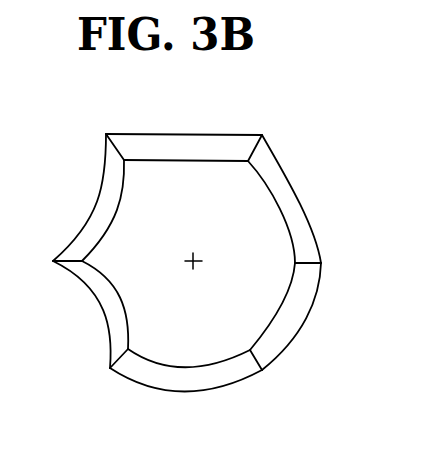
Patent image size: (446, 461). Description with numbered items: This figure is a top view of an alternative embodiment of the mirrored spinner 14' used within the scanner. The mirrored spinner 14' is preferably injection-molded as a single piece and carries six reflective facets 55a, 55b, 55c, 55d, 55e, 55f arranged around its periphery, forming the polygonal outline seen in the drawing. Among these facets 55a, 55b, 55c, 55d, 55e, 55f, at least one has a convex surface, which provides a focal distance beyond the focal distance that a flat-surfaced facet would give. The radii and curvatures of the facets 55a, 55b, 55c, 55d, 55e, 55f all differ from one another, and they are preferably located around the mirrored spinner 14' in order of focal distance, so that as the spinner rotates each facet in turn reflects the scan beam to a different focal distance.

The mirrored spinner 14' is at (224, 229).
The facet 55a is at (186, 381).
The facet 55b is at (296, 320).
The facet 55c is at (293, 197).
The facet 55d is at (188, 145).
The facet 55e is at (100, 203).
The facet 55f is at (100, 292).